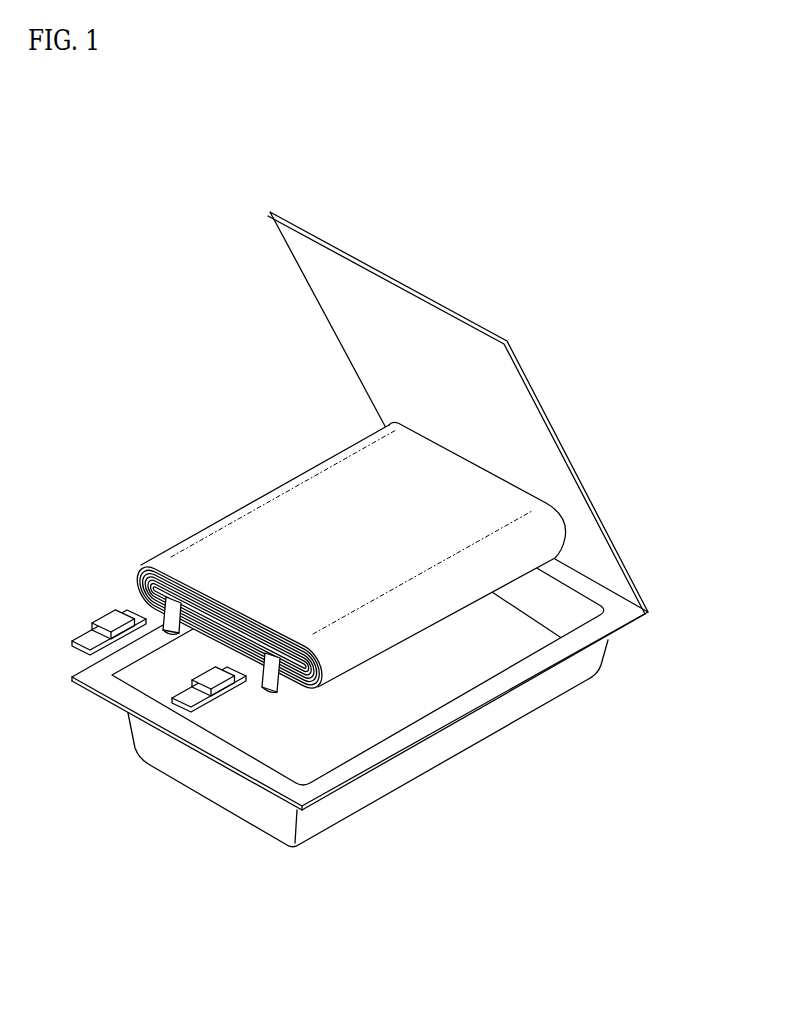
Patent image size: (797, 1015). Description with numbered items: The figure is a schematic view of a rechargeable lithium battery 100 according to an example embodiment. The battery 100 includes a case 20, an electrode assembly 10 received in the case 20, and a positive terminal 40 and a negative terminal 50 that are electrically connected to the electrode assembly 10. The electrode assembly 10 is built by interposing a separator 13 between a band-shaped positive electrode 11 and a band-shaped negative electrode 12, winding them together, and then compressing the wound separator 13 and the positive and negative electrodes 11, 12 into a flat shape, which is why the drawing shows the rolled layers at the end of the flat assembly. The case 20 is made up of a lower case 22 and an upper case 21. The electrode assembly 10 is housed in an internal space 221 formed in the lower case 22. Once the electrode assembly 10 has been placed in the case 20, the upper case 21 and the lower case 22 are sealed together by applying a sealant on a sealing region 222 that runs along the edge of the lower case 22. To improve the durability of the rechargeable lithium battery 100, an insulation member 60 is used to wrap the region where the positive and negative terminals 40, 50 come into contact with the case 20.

The rechargeable lithium battery 100 is at (133, 234).
The electrode assembly 10 is at (323, 556).
The positive electrode 11 is at (141, 566).
The negative electrode 12 is at (138, 588).
The separator 13 is at (139, 572).
The case 20 is at (399, 529).
The upper case 21 is at (623, 590).
The lower case 22 is at (381, 703).
The internal space 221 is at (404, 693).
The sealing region 222 is at (538, 662).
The positive terminal 40 is at (167, 632).
The negative terminal 50 is at (272, 686).
The insulation member 60 is at (108, 618).